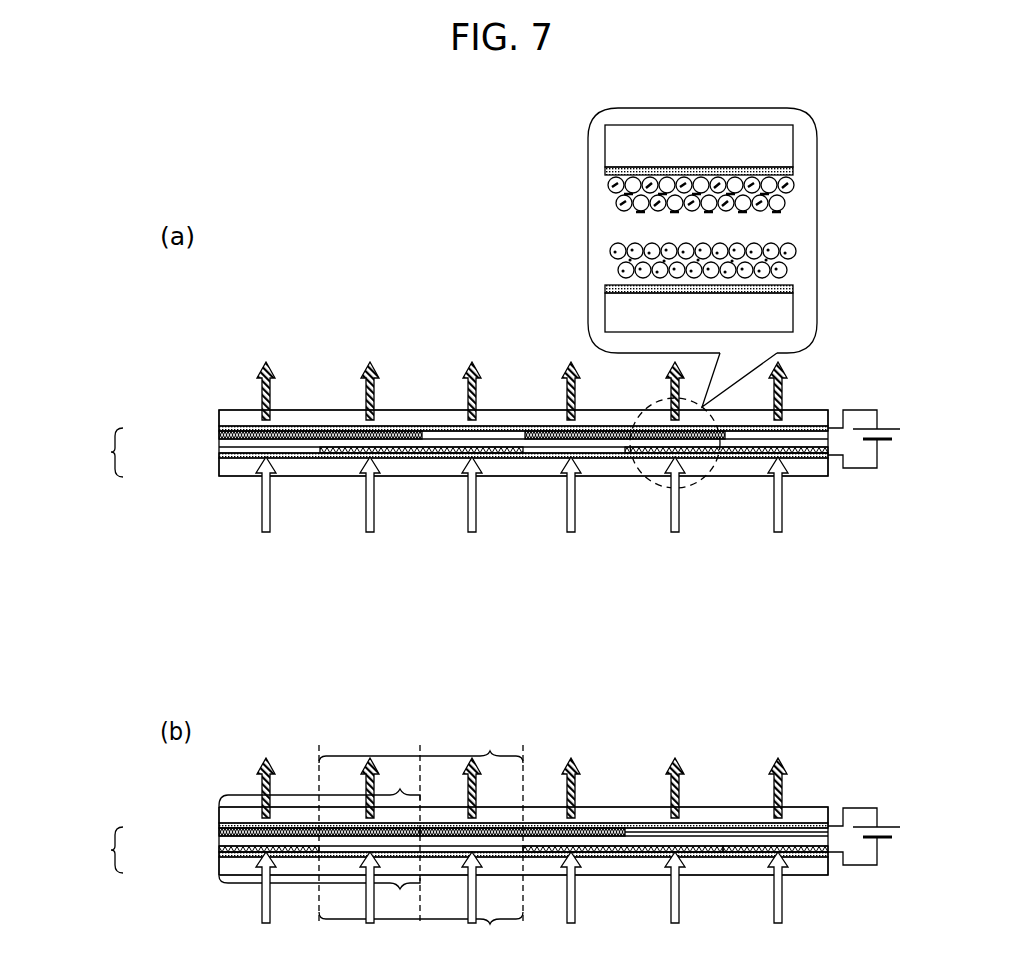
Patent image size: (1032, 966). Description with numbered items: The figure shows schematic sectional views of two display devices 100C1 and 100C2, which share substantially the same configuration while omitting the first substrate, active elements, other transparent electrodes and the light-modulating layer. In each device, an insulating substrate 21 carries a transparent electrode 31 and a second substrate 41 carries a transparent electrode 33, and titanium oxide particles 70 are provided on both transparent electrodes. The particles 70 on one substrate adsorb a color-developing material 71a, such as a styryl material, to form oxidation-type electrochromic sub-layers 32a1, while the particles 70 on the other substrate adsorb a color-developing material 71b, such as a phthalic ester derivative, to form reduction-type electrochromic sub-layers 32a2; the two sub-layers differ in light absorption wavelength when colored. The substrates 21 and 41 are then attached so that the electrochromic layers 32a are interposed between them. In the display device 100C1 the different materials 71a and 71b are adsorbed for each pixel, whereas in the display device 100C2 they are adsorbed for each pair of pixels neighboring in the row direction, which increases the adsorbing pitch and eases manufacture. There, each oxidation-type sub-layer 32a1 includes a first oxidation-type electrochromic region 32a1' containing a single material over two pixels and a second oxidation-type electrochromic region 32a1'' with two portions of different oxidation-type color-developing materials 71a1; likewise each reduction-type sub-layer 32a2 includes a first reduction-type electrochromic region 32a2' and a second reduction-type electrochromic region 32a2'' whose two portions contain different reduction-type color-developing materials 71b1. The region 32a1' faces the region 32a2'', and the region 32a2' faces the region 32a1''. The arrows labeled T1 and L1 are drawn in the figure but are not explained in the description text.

The display device 100C1 is at (338, 248).
The display device 100C2 is at (455, 728).
The second substrate 41 is at (219, 416).
The transparent electrode 33 is at (219, 428).
The electrochromic layer 32a is at (463, 639).
The reduction-type electrochromic sub-layer 32a2 is at (476, 582).
The oxidation-type electrochromic sub-layer 32a1 is at (488, 705).
The first reduction-type electrochromic region 32a2' is at (324, 800).
The second reduction-type electrochromic region 32a2'' is at (472, 781).
The first oxidation-type electrochromic region 32a1' is at (521, 900).
The second oxidation-type electrochromic region 32a1'' is at (328, 881).
The transparent electrode 31 is at (219, 455).
The insulating substrate 21 is at (240, 471).
The titanium oxide particles 70 is at (655, 218).
The color-developing material 71a is at (612, 252).
The color-developing material 71b is at (612, 210).
The oxidation-type color-developing materials 71a1 is at (810, 453).
The reduction-type color-developing materials 71b1 is at (737, 832).
The heat T1 is at (257, 362).
The light L1 is at (262, 518).